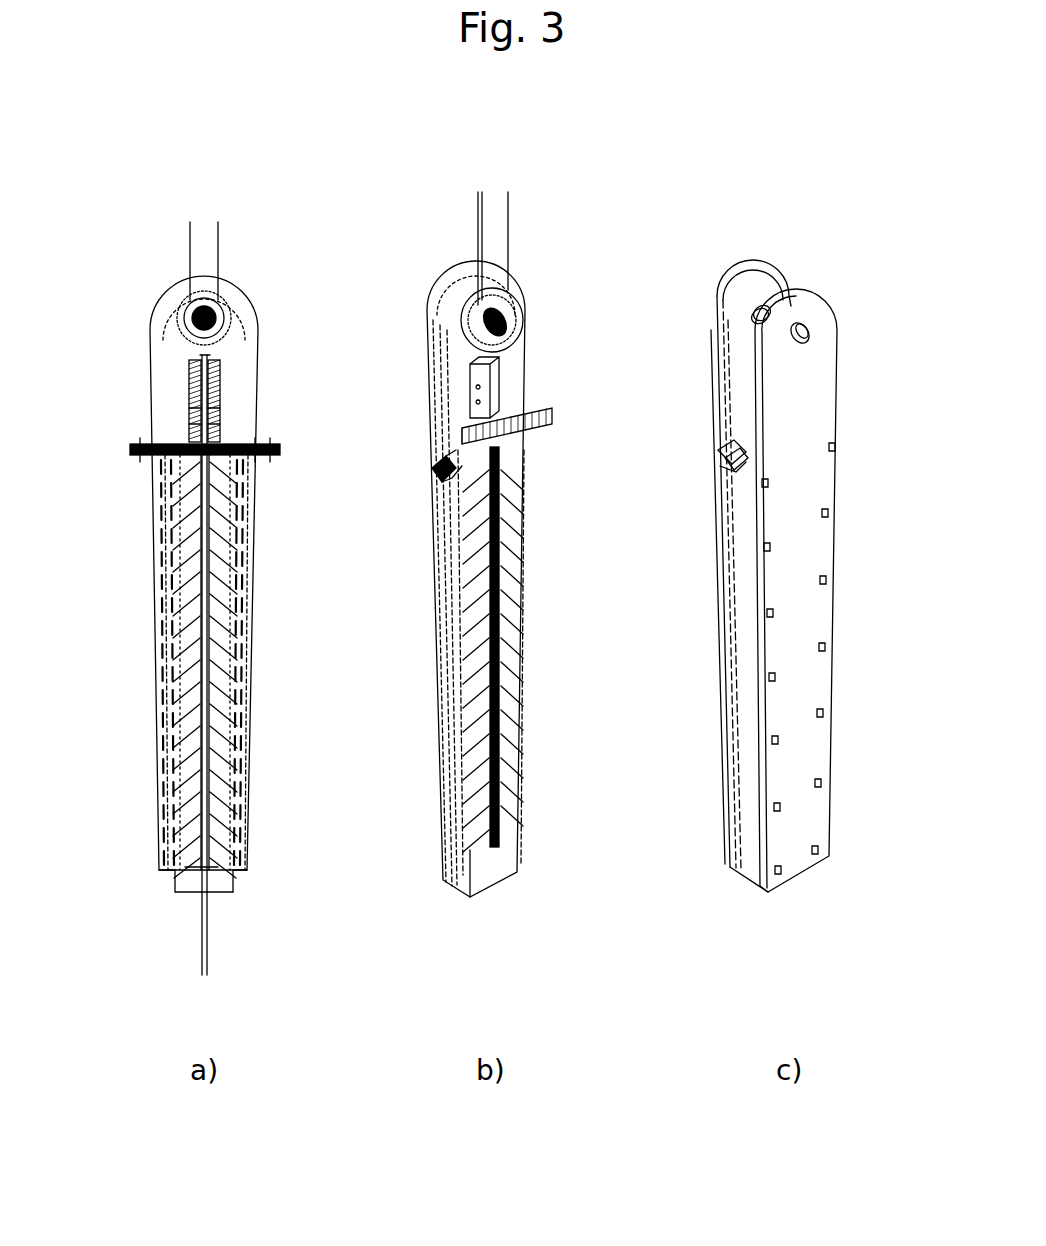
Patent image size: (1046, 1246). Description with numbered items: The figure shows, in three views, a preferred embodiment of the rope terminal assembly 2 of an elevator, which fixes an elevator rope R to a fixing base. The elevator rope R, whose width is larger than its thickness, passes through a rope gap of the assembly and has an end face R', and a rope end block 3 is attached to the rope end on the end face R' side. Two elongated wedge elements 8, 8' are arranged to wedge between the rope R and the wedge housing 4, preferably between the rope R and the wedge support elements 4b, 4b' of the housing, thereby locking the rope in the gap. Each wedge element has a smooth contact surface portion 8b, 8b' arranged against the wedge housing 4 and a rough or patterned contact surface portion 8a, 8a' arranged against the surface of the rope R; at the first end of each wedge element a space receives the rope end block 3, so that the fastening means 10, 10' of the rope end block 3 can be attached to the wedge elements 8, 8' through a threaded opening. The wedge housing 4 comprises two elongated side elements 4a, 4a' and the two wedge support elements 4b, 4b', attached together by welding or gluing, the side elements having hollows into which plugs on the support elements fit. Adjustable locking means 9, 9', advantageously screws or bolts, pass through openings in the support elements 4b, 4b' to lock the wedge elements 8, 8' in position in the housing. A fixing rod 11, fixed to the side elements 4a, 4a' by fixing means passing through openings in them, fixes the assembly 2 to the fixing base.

The rope terminal assembly 2 is at (134, 238).
The fixing rod 11 is at (206, 250).
The end face R' is at (272, 336).
The fastening means 10 is at (146, 399).
The fastening means 10' is at (278, 401).
The adjustable locking means 9 is at (400, 453).
The adjustable locking means 9' is at (435, 444).
The smooth contact surface portion 8b is at (133, 662).
The smooth contact surface portion 8b' is at (271, 662).
The wedge element 8' is at (408, 674).
The rough or patterned contact surface portion 8a is at (136, 662).
The wedge support element 4b' is at (291, 802).
The wedge element 8 is at (284, 674).
The wedge support element 4b is at (414, 847).
The elevator rope R is at (138, 686).
The rope end block 3 is at (498, 372).
The rough or patterned contact surface portion 8a' is at (535, 579).
The wedge housing 4 is at (727, 245).
The side element 4a is at (784, 529).
The side element 4a' is at (853, 590).